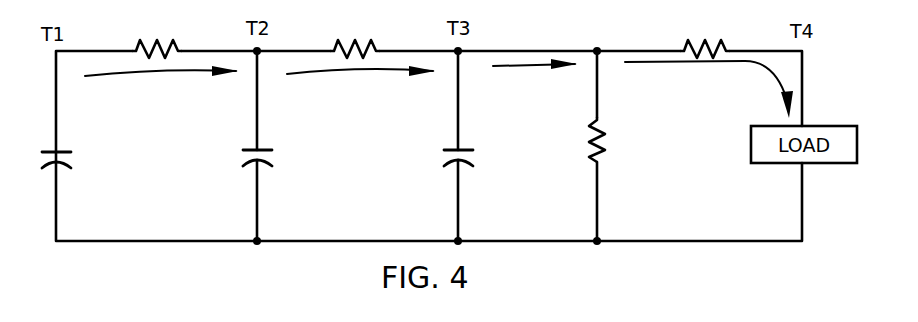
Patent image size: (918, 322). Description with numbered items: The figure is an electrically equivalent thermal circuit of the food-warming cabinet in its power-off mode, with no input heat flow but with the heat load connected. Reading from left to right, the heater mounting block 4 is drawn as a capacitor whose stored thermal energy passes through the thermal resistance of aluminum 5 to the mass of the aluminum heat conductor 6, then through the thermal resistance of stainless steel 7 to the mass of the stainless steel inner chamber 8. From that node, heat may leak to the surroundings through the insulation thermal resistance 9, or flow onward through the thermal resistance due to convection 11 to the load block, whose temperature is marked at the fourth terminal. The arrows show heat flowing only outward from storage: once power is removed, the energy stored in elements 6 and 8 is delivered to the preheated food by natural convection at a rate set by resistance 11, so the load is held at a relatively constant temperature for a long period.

The heater mounting block 4 is at (66, 158).
The thermal resistance of aluminum 5 is at (157, 36).
The mass of the aluminum heat conductor 6 is at (266, 156).
The thermal resistance of stainless steel 7 is at (355, 35).
The mass of the stainless steel inner chamber 8 is at (467, 156).
The insulation thermal resistance 9 is at (607, 139).
The thermal resistance due to convection 11 is at (705, 33).